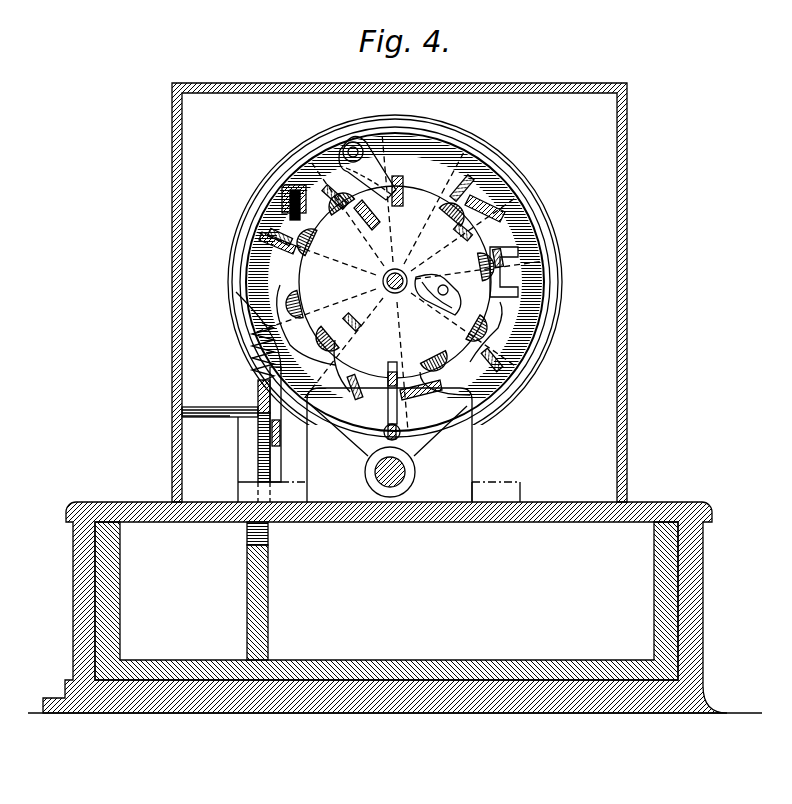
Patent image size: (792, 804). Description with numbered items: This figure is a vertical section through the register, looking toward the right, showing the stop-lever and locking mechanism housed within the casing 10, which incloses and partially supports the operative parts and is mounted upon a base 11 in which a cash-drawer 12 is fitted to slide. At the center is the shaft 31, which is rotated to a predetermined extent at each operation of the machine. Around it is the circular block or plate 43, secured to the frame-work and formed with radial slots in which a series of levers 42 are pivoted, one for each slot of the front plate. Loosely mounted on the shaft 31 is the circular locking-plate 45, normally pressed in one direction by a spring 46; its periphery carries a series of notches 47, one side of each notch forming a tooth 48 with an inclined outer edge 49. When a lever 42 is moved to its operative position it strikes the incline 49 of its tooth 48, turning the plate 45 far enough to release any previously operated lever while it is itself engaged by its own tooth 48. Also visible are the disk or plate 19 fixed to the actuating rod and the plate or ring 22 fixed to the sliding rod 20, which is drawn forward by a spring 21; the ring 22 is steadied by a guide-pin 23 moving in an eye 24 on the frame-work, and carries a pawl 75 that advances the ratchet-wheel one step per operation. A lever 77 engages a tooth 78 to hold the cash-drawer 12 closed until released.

The casing 10 is at (172, 230).
The base 11 is at (73, 549).
The cash-drawer 12 is at (383, 664).
The disk or plate 19 is at (472, 138).
The sliding rod or bar 20 is at (415, 476).
The spring 21 is at (400, 436).
The plate or ring 22 is at (514, 190).
The guide-pin 23 is at (352, 143).
The eye 24 is at (367, 168).
The shaft 31 is at (393, 285).
The levers 42 is at (332, 194).
The circular block or plate 43 is at (498, 332).
The circular locking-plate 45 is at (399, 282).
The spring 46 is at (432, 302).
The notches 47 is at (458, 222).
The tooth 48 is at (389, 282).
The inclined outer edge 49 is at (516, 262).
The pawl 75 is at (282, 205).
The lever 77 is at (258, 404).
The tooth 78 is at (268, 532).